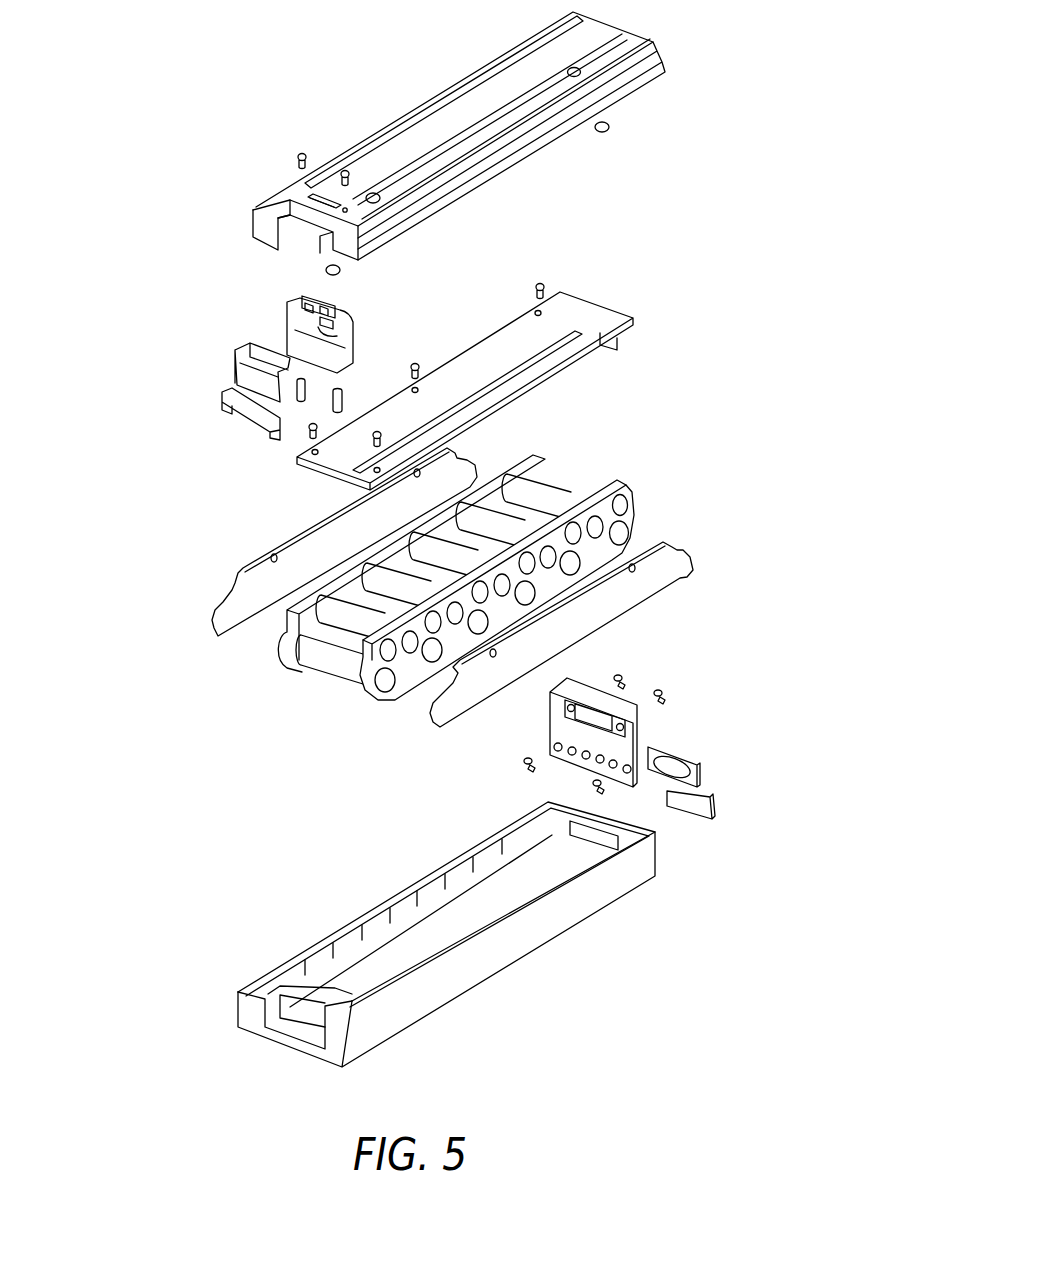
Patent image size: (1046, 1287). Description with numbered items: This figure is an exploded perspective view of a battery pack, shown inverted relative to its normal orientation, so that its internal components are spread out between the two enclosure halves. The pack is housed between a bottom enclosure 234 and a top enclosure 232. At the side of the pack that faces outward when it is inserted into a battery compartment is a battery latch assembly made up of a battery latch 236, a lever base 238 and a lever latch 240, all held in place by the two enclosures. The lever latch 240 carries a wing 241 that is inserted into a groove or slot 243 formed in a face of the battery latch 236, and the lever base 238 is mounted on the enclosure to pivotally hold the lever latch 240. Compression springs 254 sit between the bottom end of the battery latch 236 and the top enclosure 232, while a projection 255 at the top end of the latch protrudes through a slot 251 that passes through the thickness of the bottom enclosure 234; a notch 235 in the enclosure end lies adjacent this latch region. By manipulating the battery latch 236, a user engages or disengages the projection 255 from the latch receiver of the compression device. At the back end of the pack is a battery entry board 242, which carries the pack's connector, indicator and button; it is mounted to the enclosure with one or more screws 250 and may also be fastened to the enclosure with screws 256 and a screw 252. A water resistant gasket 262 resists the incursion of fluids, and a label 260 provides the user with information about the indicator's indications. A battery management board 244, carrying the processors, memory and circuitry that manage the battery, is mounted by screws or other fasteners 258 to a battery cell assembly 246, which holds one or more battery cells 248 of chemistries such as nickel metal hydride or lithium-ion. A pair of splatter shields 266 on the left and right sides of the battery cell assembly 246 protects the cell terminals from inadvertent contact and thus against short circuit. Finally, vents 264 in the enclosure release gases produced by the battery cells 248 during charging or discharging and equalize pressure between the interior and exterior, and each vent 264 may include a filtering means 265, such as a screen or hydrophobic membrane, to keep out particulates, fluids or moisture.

The top enclosure 232 is at (498, 950).
The bottom enclosure 234 is at (438, 127).
The notch 235 is at (280, 243).
The battery latch 236 is at (293, 333).
The lever base 238 is at (220, 407).
The lever latch 240 is at (237, 370).
The wing 241 is at (250, 345).
The battery entry board 242 is at (643, 735).
The slot 243 is at (320, 327).
The battery management board 244 is at (605, 318).
The battery cell assembly 246 is at (277, 647).
The battery cell 248 is at (557, 493).
The screw 250 is at (528, 763).
The slot 251 is at (307, 197).
The screw 252 is at (300, 153).
The compression spring 254 is at (333, 397).
The projection 255 is at (327, 297).
The screw 256 is at (620, 678).
The fastener 258 is at (535, 290).
The label 260 is at (712, 812).
The water resistant gasket 262 is at (683, 757).
The vent 264 is at (577, 66).
The filtering means 265 is at (610, 128).
The splatter shield 266 is at (683, 568).